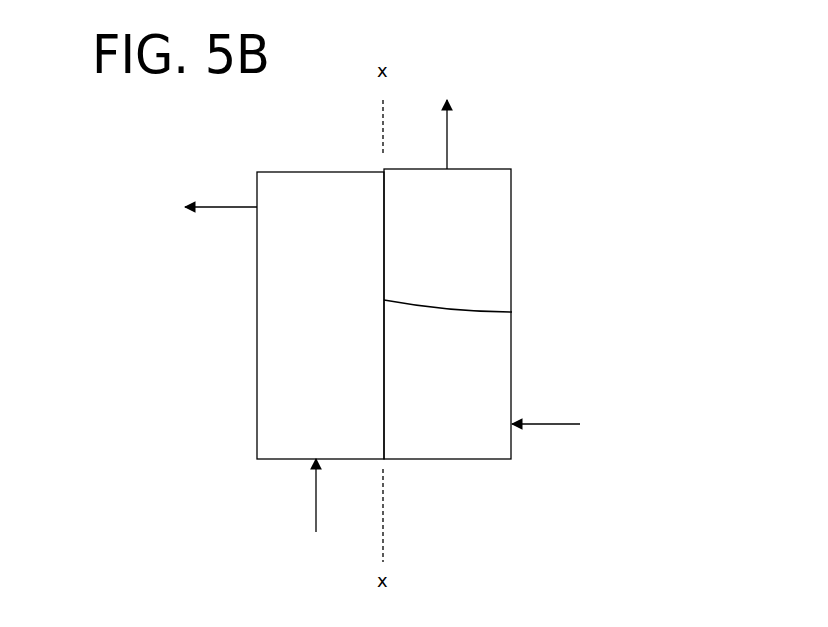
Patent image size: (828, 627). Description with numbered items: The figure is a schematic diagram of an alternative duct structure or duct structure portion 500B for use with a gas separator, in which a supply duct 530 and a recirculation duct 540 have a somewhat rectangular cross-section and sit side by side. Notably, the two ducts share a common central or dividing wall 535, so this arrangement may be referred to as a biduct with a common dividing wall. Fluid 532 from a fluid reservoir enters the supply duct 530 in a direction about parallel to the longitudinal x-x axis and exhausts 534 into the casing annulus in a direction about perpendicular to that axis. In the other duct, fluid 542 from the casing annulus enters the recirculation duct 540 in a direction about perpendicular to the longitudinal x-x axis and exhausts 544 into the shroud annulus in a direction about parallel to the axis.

The duct structure 500B is at (528, 60).
The supply duct 530 is at (257, 400).
The recirculation duct 540 is at (512, 200).
The dividing wall 535 is at (512, 312).
The fluid 532 is at (316, 513).
The exhaust 534 is at (192, 209).
The fluid 542 is at (572, 423).
The exhaust 544 is at (449, 117).